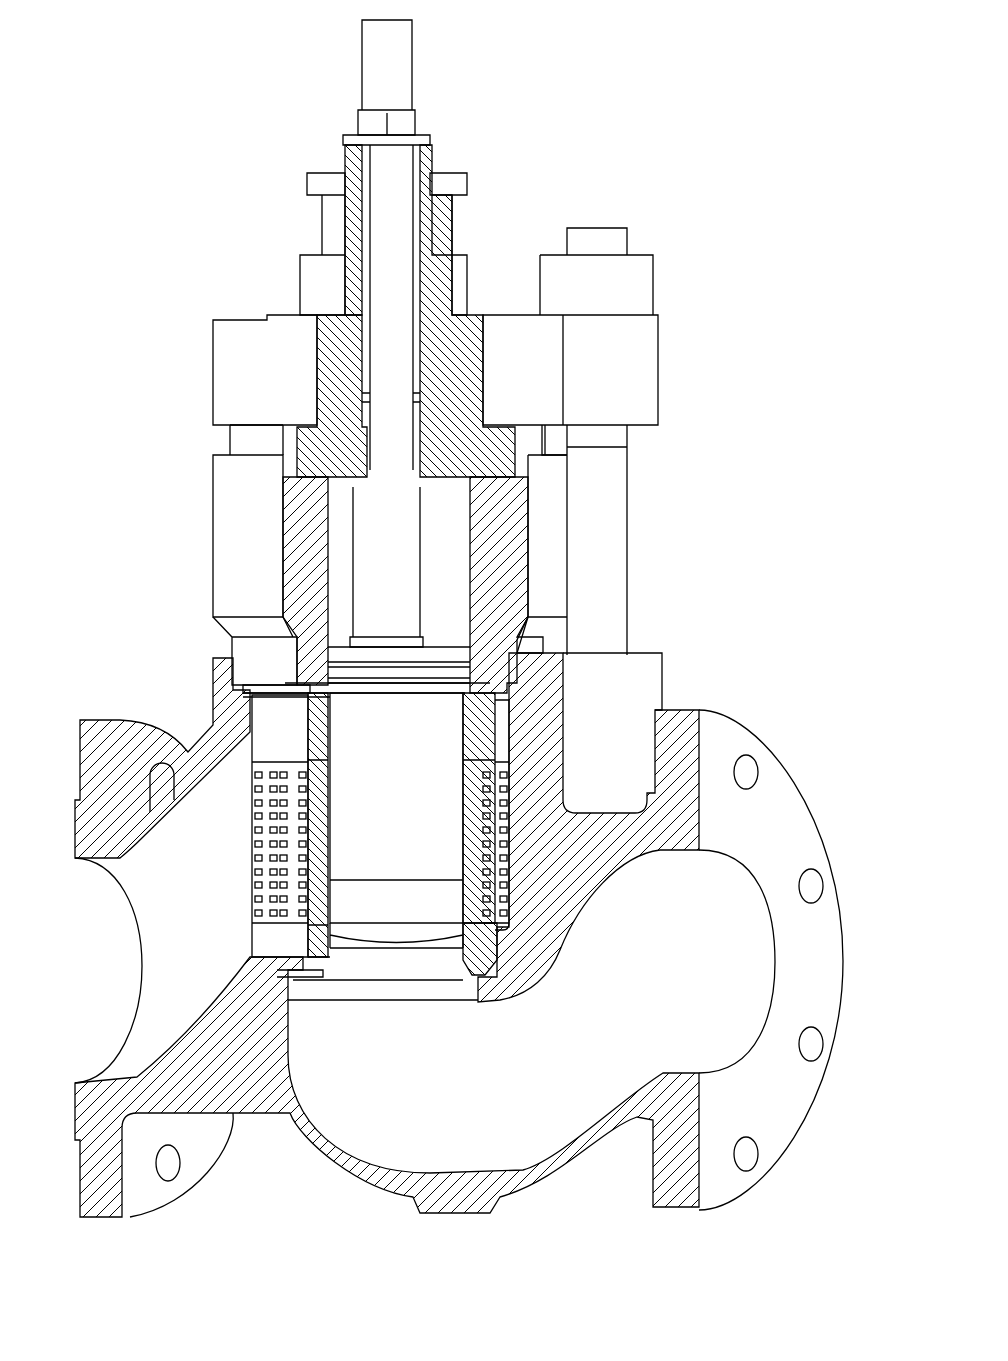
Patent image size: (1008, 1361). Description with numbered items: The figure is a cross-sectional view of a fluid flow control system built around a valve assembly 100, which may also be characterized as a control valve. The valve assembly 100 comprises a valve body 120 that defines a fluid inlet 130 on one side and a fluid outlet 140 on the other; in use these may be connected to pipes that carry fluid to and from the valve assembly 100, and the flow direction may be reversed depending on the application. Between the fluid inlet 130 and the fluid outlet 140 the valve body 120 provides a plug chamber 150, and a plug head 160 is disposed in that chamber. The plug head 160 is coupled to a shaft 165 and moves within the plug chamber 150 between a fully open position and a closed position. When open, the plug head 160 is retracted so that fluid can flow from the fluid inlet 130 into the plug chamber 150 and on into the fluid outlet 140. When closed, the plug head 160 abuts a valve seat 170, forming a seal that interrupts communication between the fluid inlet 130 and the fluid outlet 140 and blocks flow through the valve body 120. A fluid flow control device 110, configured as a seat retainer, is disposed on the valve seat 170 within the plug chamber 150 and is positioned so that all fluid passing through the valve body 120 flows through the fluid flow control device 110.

The valve assembly 100 is at (128, 170).
The fluid flow control device 110 is at (515, 780).
The valve body 120 is at (205, 742).
The fluid inlet 130 is at (153, 935).
The fluid outlet 140 is at (766, 962).
The plug chamber 150 is at (443, 943).
The plug head 160 is at (396, 820).
The shaft 165 is at (385, 175).
The valve seat 170 is at (467, 960).